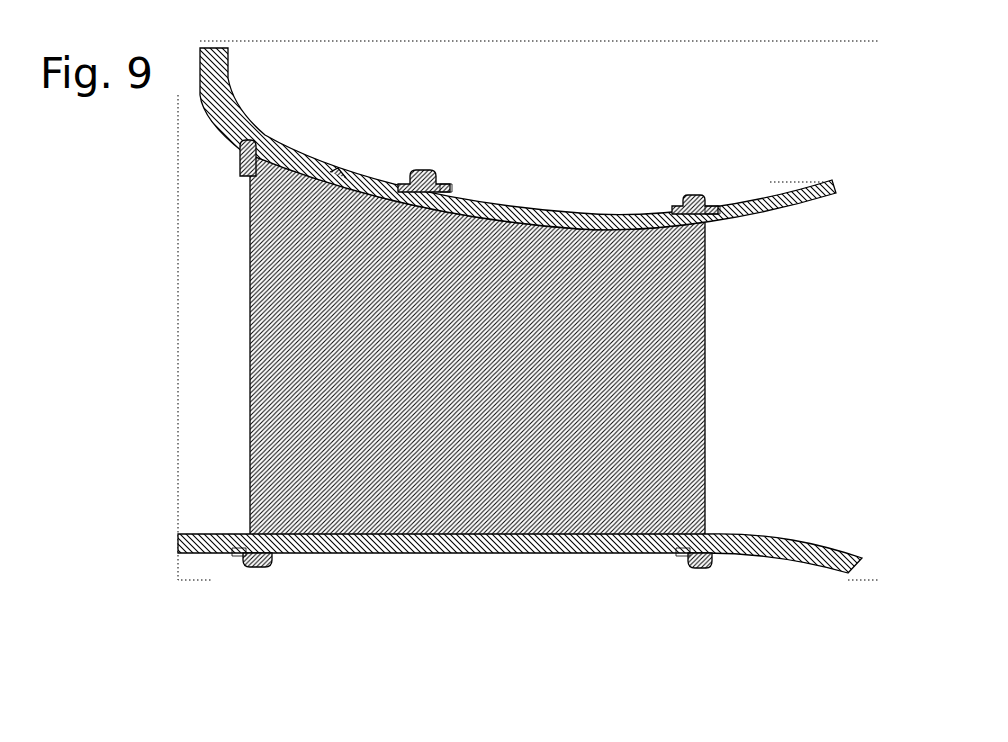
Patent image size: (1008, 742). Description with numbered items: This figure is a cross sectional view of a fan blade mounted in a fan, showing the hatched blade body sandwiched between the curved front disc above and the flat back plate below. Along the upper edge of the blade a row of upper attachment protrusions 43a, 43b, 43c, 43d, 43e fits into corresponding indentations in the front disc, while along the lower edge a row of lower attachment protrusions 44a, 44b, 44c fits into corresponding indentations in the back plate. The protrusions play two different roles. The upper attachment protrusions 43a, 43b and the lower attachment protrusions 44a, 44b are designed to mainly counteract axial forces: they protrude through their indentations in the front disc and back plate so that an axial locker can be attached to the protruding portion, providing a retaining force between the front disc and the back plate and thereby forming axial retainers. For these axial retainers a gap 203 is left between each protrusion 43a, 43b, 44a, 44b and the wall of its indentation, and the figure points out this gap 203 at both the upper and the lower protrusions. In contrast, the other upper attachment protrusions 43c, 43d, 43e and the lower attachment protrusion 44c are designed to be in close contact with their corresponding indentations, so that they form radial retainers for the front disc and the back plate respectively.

The upper attachment protrusion 43a is at (693, 196).
The upper attachment protrusion 43b is at (422, 170).
The upper attachment protrusion 43c is at (568, 213).
The upper attachment protrusion 43d is at (338, 174).
The upper attachment protrusion 43e is at (259, 148).
The lower attachment protrusion 44a is at (700, 568).
The lower attachment protrusion 44b is at (259, 567).
The lower attachment protrusion 44c is at (562, 555).
The gap 203 is at (447, 186).